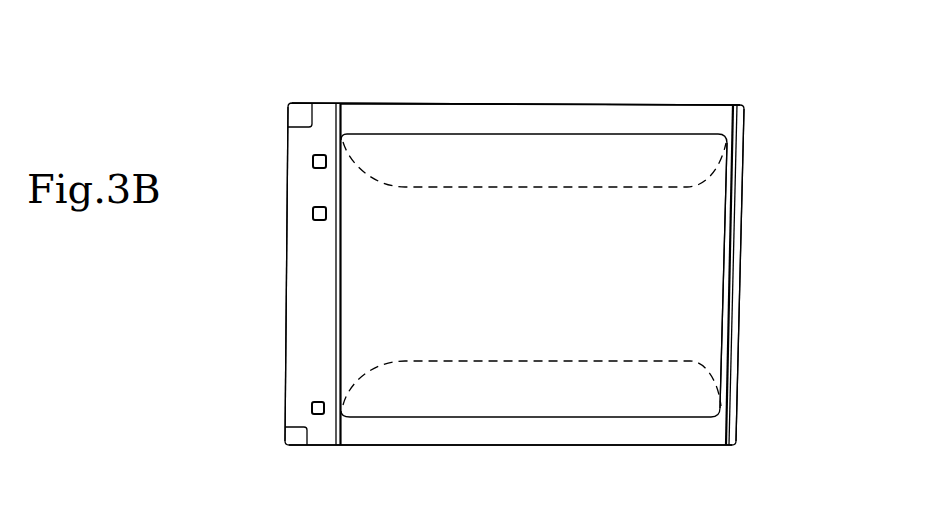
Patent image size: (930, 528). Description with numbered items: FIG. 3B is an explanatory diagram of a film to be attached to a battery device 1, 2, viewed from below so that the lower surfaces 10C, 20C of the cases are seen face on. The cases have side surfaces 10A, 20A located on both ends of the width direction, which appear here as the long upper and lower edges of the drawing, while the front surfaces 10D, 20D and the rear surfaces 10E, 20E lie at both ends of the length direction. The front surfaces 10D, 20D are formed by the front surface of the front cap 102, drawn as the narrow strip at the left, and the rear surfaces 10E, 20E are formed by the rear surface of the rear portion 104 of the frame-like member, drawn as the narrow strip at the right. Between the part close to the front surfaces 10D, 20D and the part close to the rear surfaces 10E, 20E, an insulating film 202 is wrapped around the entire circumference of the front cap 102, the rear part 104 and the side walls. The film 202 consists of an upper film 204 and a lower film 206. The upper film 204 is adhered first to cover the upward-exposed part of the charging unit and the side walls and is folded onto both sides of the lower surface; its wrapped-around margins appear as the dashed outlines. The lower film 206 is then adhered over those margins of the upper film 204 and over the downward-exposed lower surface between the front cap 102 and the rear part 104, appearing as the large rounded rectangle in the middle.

The image forming apparatus / cartridge 1 is at (473, 234).
The cartridge 2 is at (297, 90).
The front cap 102 is at (300, 378).
The rear portion 104 is at (738, 377).
The film 202 is at (428, 103).
The upper film 204 is at (723, 178).
The lower film 206 is at (685, 133).
The side surface 10A is at (514, 270).
The side surface 20A is at (573, 103).
The lower surface 10C is at (769, 275).
The lower surface 20C is at (723, 275).
The front surface 10D is at (230, 274).
The front surface 20D is at (287, 349).
The rear surface 10E is at (798, 275).
The rear surface 20E is at (741, 308).